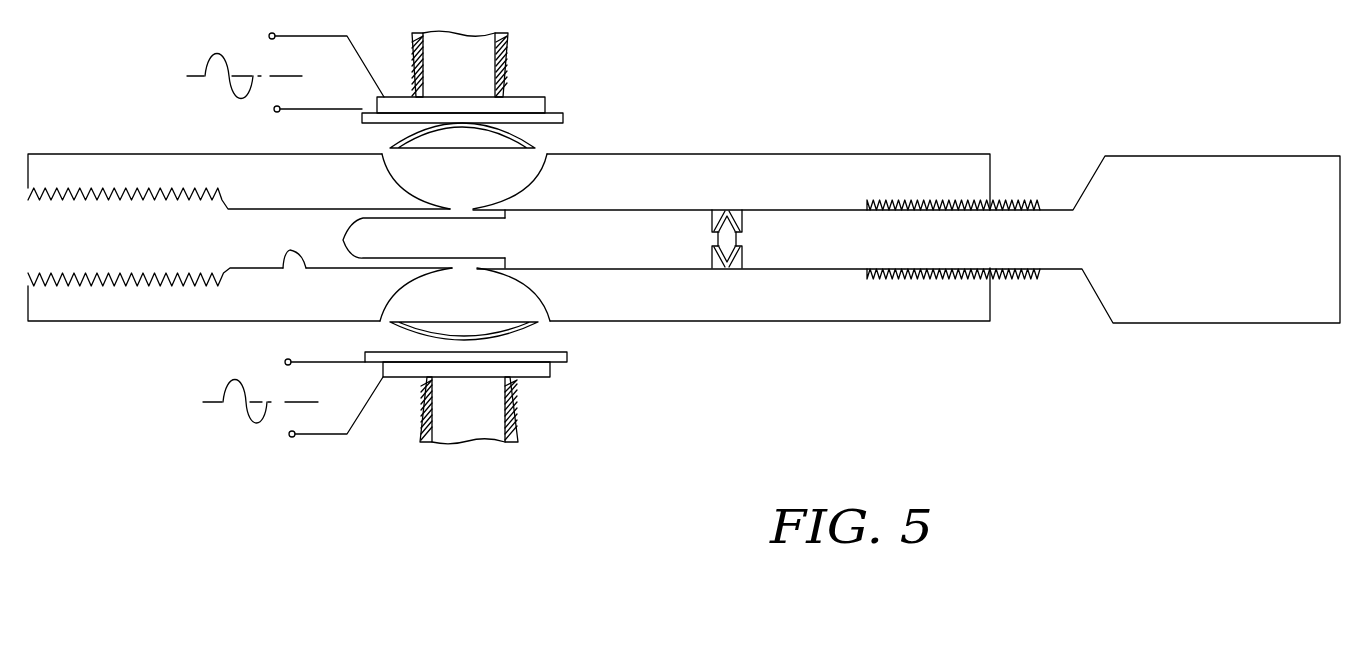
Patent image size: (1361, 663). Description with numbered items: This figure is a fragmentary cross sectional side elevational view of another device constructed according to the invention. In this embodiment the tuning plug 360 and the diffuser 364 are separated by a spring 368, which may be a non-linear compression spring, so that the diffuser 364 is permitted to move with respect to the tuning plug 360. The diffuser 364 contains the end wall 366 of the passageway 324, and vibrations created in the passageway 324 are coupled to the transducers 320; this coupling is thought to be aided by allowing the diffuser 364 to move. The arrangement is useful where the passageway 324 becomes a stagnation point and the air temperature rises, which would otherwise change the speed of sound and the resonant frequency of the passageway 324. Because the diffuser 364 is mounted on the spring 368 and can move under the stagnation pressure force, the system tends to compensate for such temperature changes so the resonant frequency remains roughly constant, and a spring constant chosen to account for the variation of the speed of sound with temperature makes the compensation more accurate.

The transducer 320 is at (547, 103).
The passageway 324 is at (283, 262).
The tuning plug 360 is at (799, 240).
The diffuser 364 is at (453, 242).
The end wall 366 is at (487, 212).
The spring 368 is at (722, 283).